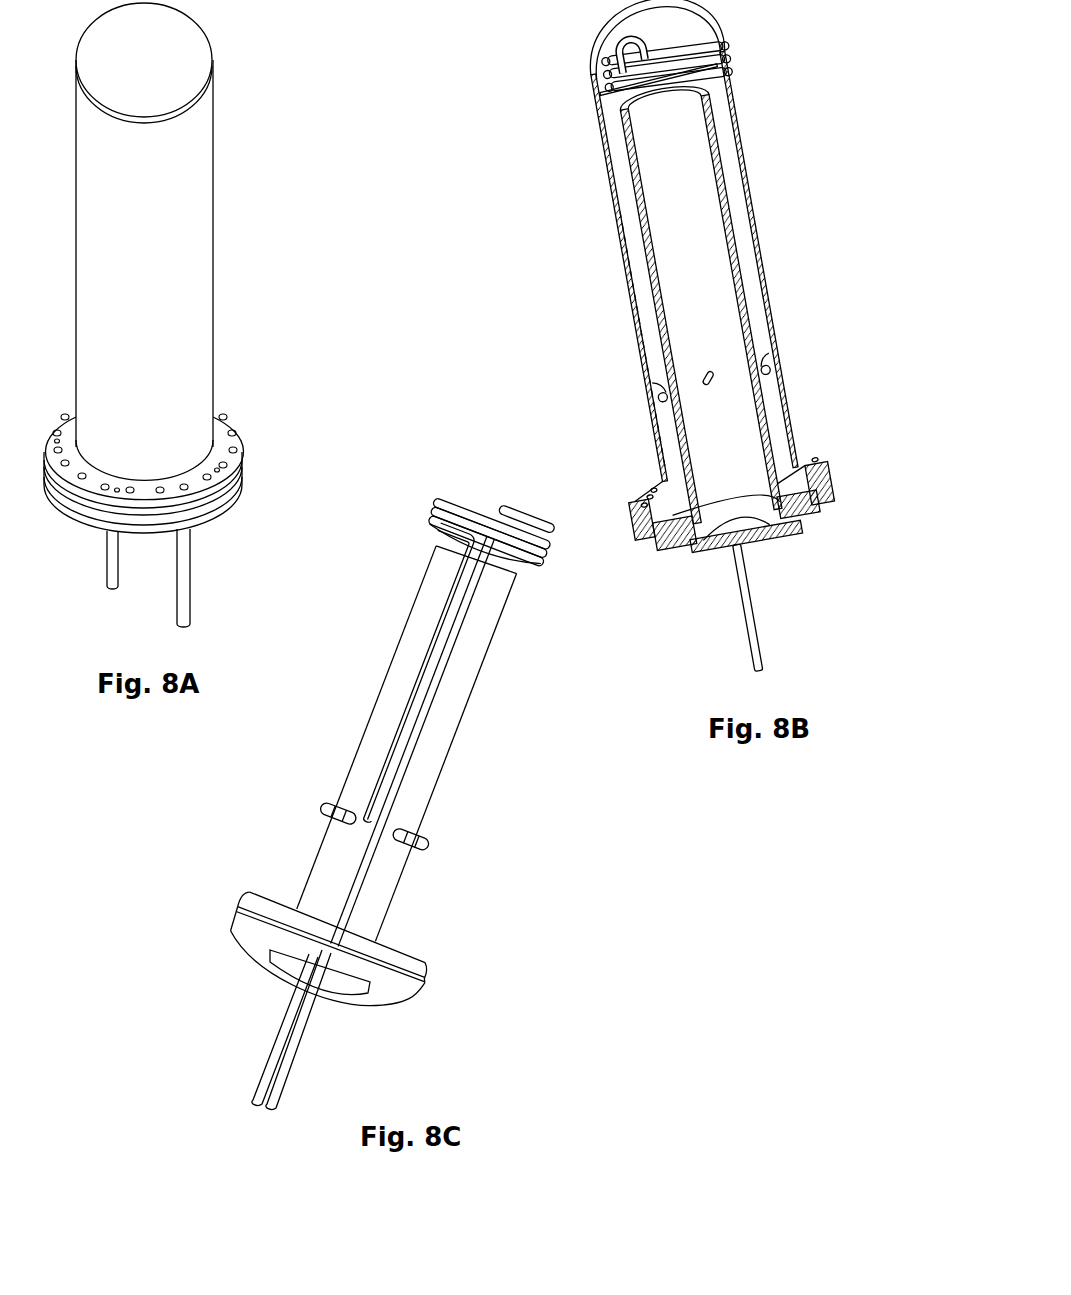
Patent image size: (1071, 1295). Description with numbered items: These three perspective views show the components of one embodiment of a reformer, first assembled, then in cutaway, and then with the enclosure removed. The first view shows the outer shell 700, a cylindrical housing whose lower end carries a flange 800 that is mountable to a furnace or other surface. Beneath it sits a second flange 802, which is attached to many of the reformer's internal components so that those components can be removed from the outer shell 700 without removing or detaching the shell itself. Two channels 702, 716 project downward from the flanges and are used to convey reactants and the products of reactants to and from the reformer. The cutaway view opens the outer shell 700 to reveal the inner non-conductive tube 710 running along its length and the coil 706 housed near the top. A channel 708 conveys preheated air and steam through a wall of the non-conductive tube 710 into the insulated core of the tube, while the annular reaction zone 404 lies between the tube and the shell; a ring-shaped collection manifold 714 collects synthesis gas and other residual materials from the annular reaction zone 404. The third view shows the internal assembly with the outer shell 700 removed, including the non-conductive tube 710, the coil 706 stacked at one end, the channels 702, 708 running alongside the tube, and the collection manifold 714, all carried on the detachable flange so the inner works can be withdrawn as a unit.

In FIG. 8A, the outer shell 700 is at (188, 206).
In FIG. 8B, the outer shell 700 is at (740, 116).
In FIG. 8A, the flange 800 is at (232, 416).
In FIG. 8A, the second flange 802 is at (237, 491).
In FIG. 8A, the channel 702 is at (112, 561).
In FIG. 8C, the channel 702 is at (443, 622).
In FIG. 8A, the channel 716 is at (185, 578).
In FIG. 8B, the annular reaction zone 404 is at (738, 210).
In FIG. 8B, the coil 706 is at (738, 28).
In FIG. 8C, the coil 706 is at (563, 535).
In FIG. 8B, the inner non-conductive tube 710 is at (735, 262).
In FIG. 8C, the inner non-conductive tube 710 is at (447, 713).
In FIG. 8B, the channel 708 is at (705, 372).
In FIG. 8C, the channel 708 is at (460, 620).
In FIG. 8B, the collection manifold 714 is at (770, 367).
In FIG. 8C, the collection manifold 714 is at (428, 845).